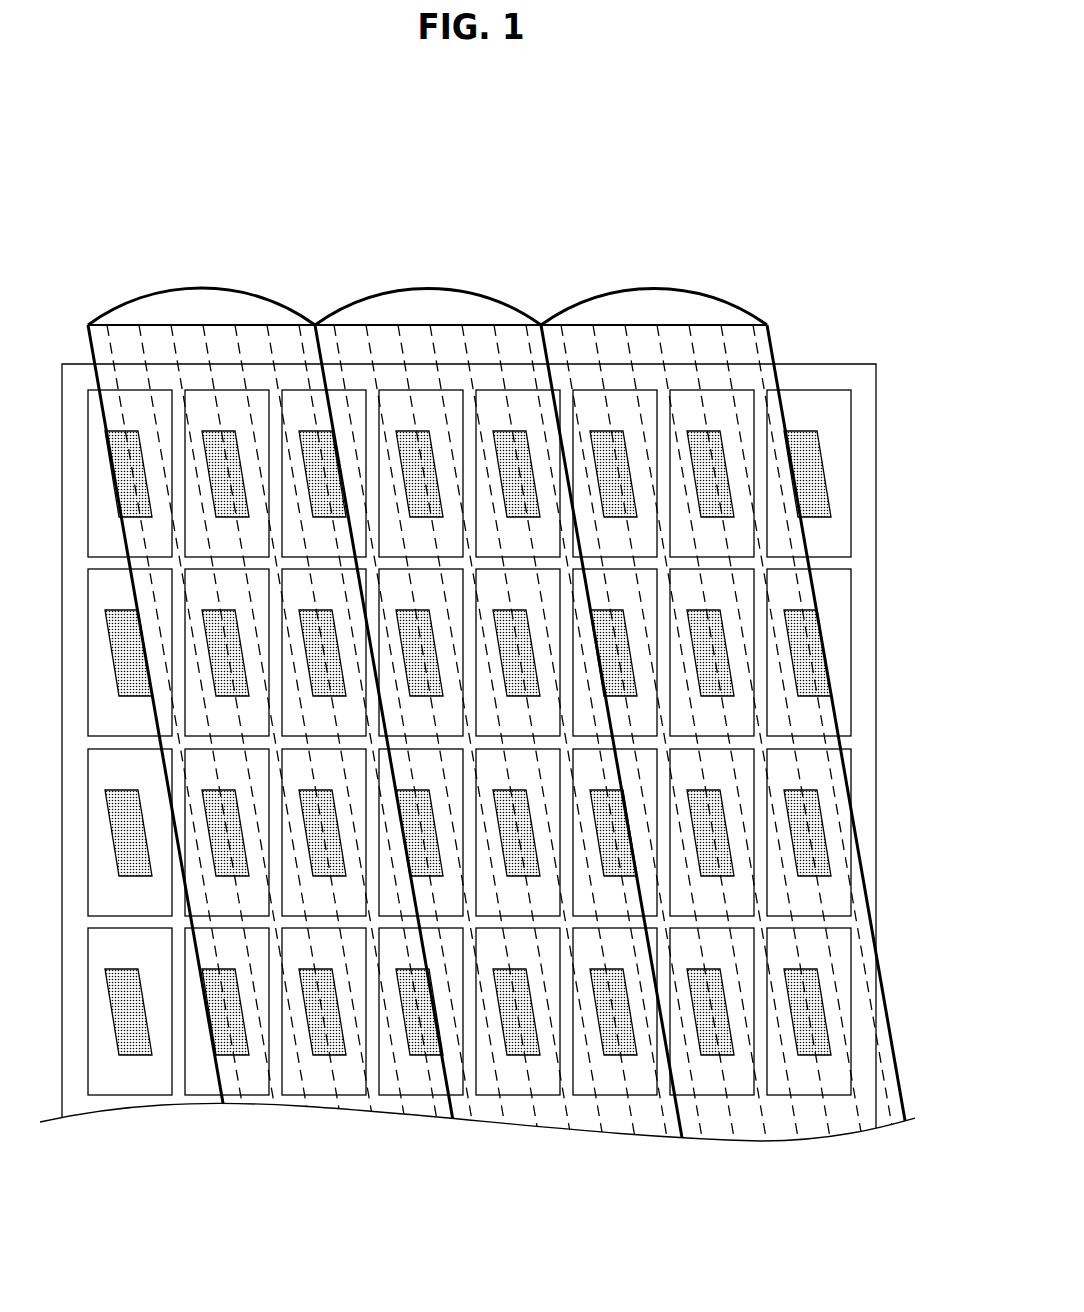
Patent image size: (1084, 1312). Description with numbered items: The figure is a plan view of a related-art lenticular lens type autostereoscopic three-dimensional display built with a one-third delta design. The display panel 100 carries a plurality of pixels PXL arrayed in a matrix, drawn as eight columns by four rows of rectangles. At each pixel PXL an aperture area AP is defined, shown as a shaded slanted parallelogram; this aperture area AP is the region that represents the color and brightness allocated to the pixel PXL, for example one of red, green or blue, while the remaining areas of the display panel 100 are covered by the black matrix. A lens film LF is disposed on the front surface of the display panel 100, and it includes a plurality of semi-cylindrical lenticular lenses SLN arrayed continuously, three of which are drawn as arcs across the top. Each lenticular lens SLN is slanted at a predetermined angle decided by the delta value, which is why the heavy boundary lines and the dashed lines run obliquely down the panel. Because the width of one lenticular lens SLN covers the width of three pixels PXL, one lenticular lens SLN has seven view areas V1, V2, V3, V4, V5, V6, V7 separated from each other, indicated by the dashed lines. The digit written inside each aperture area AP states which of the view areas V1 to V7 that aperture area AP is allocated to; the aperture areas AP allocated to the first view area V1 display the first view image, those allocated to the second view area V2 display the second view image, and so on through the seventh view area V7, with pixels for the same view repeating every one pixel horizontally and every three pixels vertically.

The display panel 100 is at (876, 636).
The pixel PXL is at (851, 443).
The aperture area AP is at (833, 490).
The lenticular lens SLN is at (418, 288).
The lens film LF is at (778, 345).
The first view area V1 is at (108, 338).
The second view area V2 is at (139, 338).
The third view area V3 is at (170, 338).
The fourth view area V4 is at (202, 338).
The fifth view area V5 is at (234, 338).
The sixth view area V6 is at (266, 338).
The seventh view area V7 is at (298, 338).